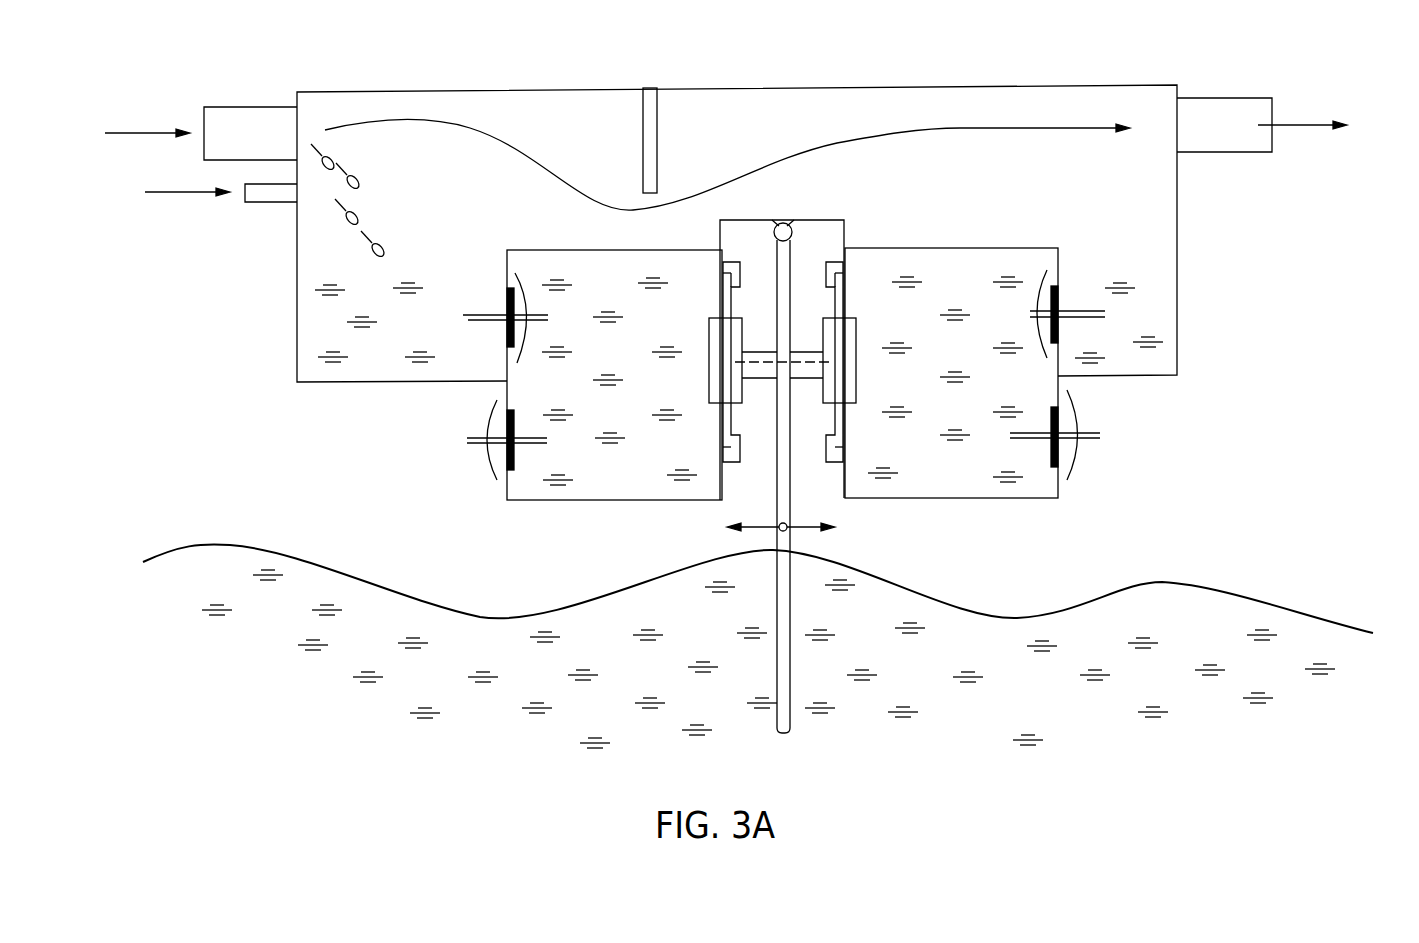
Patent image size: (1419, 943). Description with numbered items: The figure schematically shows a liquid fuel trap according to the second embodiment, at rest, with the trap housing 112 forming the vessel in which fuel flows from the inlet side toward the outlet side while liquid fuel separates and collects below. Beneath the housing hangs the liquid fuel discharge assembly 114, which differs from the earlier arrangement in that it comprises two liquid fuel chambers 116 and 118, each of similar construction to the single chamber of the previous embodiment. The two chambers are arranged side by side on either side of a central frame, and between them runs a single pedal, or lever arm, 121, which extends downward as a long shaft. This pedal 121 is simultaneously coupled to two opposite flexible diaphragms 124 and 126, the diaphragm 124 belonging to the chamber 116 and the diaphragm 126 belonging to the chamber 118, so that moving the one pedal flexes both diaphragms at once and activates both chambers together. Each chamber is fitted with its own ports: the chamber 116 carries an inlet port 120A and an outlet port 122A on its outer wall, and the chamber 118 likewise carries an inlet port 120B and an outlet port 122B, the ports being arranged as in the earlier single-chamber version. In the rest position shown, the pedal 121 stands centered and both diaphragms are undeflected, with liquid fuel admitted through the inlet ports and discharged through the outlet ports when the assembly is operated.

The housing / fluid treatment chamber 112 is at (249, 360).
The liquid fuel discharge assembly 114 is at (777, 211).
The liquid fuel chamber 116 is at (558, 495).
The liquid fuel chamber 118 is at (968, 485).
The inlet port 120A is at (507, 290).
The inlet port 120B is at (1058, 339).
The pedal 121 is at (790, 487).
The outlet port 122A is at (514, 458).
The outlet port 122B is at (1050, 470).
The flexible diaphragm 124 is at (722, 298).
The flexible diaphragm 126 is at (845, 293).